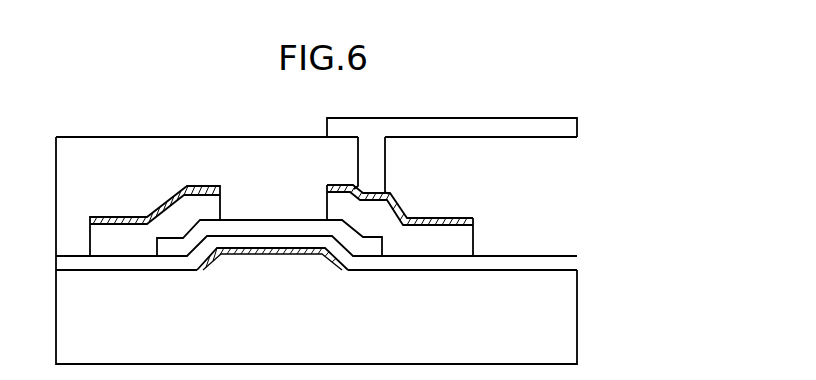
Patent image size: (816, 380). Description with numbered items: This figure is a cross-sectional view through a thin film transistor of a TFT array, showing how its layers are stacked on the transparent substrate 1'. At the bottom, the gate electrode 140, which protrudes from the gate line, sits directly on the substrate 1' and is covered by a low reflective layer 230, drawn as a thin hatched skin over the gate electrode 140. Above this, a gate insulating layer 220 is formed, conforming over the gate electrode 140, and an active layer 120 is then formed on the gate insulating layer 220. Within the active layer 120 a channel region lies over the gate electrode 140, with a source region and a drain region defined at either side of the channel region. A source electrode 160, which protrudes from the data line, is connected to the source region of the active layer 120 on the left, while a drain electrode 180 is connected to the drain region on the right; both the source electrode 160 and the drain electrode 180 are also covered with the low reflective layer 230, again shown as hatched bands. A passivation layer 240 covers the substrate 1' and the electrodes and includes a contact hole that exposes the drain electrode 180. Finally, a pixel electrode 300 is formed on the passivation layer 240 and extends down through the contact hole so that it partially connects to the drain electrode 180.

The transparent substrate 1' is at (374, 250).
The active layer 120 is at (257, 232).
The gate electrode 140 is at (280, 262).
The source electrode 160 is at (167, 215).
The drain electrode 180 is at (393, 221).
The gate insulating layer 220 is at (568, 262).
The low reflective layer 230 is at (332, 268).
The passivation layer 240 is at (569, 194).
The pixel electrode 300 is at (577, 118).